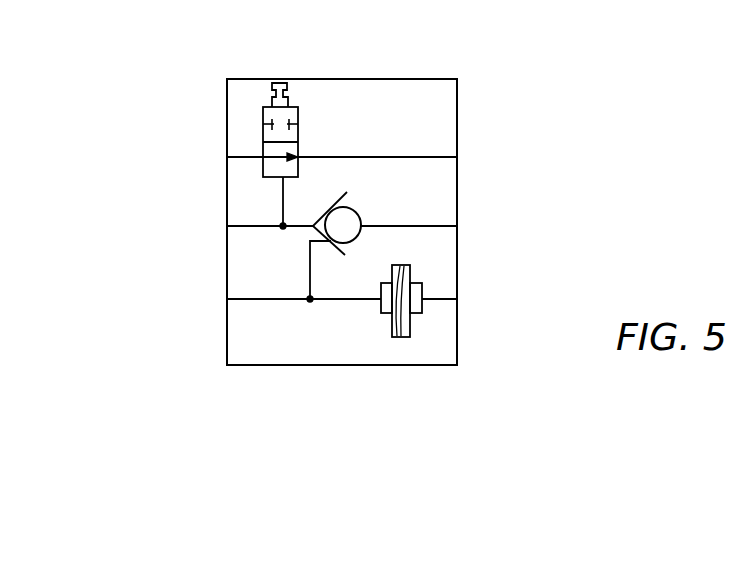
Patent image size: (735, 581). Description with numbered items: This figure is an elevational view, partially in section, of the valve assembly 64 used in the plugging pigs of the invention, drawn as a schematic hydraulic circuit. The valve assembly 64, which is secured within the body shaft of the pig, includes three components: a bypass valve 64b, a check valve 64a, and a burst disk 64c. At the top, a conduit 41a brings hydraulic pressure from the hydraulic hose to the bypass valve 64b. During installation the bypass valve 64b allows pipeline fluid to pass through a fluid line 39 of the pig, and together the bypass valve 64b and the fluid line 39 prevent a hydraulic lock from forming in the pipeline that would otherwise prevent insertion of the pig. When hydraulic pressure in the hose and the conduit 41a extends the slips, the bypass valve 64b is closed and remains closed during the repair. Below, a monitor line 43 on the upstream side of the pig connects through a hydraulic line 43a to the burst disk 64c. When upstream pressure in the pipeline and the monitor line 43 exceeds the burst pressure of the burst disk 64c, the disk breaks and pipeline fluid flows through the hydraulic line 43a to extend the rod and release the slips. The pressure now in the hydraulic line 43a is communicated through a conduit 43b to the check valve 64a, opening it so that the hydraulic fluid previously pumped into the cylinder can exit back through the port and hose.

The fluid line 39 is at (243, 156).
The bypass valve 64b is at (298, 112).
The conduit 41a is at (281, 191).
The valve assembly 64 is at (226, 237).
The check valve 64a is at (357, 211).
The burst disk 64c is at (410, 267).
The conduit 43b is at (309, 268).
The monitor line 43 is at (440, 299).
The hydraulic line 43a is at (270, 302).